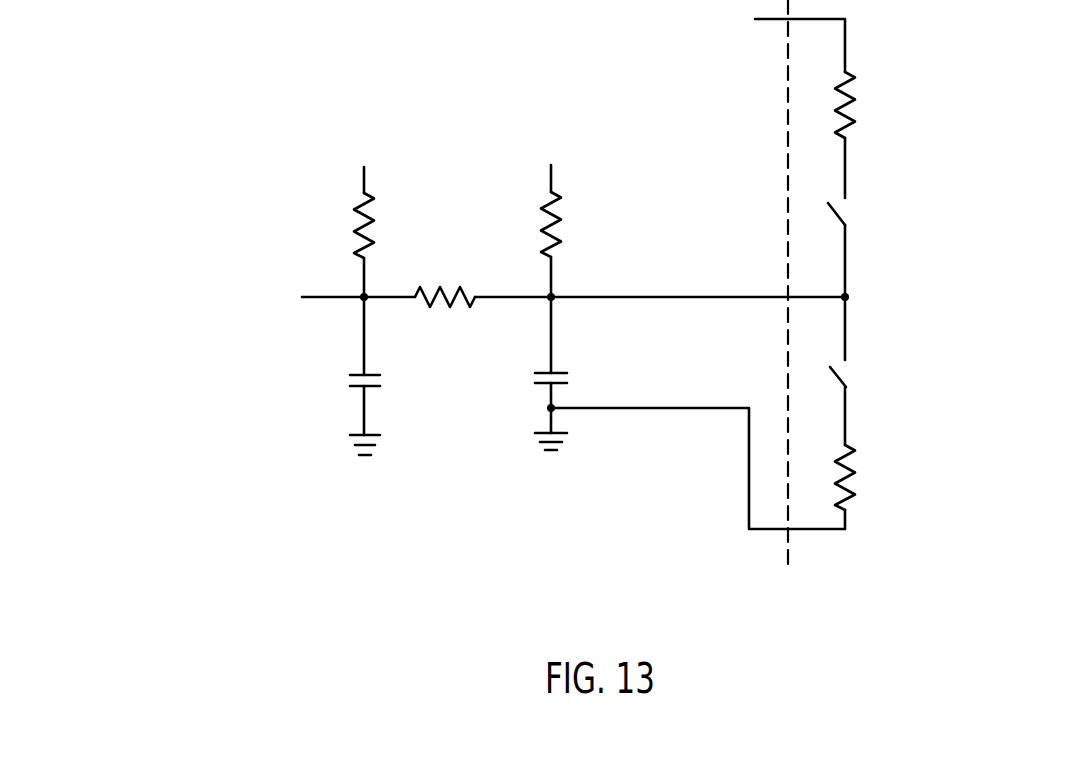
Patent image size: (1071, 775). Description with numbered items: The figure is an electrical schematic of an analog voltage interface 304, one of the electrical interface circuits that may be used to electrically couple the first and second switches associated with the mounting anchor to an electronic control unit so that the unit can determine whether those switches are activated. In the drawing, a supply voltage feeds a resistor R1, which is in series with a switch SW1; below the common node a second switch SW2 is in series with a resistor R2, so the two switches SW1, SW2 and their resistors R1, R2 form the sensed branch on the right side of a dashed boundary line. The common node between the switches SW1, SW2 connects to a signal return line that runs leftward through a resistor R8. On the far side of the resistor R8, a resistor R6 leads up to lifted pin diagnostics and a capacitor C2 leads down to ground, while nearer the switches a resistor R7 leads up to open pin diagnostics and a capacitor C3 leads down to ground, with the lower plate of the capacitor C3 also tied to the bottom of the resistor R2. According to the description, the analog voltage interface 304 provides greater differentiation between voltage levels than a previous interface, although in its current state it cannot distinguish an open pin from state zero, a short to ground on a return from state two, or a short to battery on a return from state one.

The analog voltage interface 304 is at (170, 122).
The resistor R1 is at (861, 105).
The resistor R2 is at (865, 477).
The resistor R6 is at (382, 225).
The resistor R7 is at (568, 224).
The resistor R8 is at (445, 281).
The capacitor C2 is at (385, 381).
The capacitor C3 is at (570, 379).
The first switch SW1 is at (865, 209).
The second switch SW2 is at (870, 378).